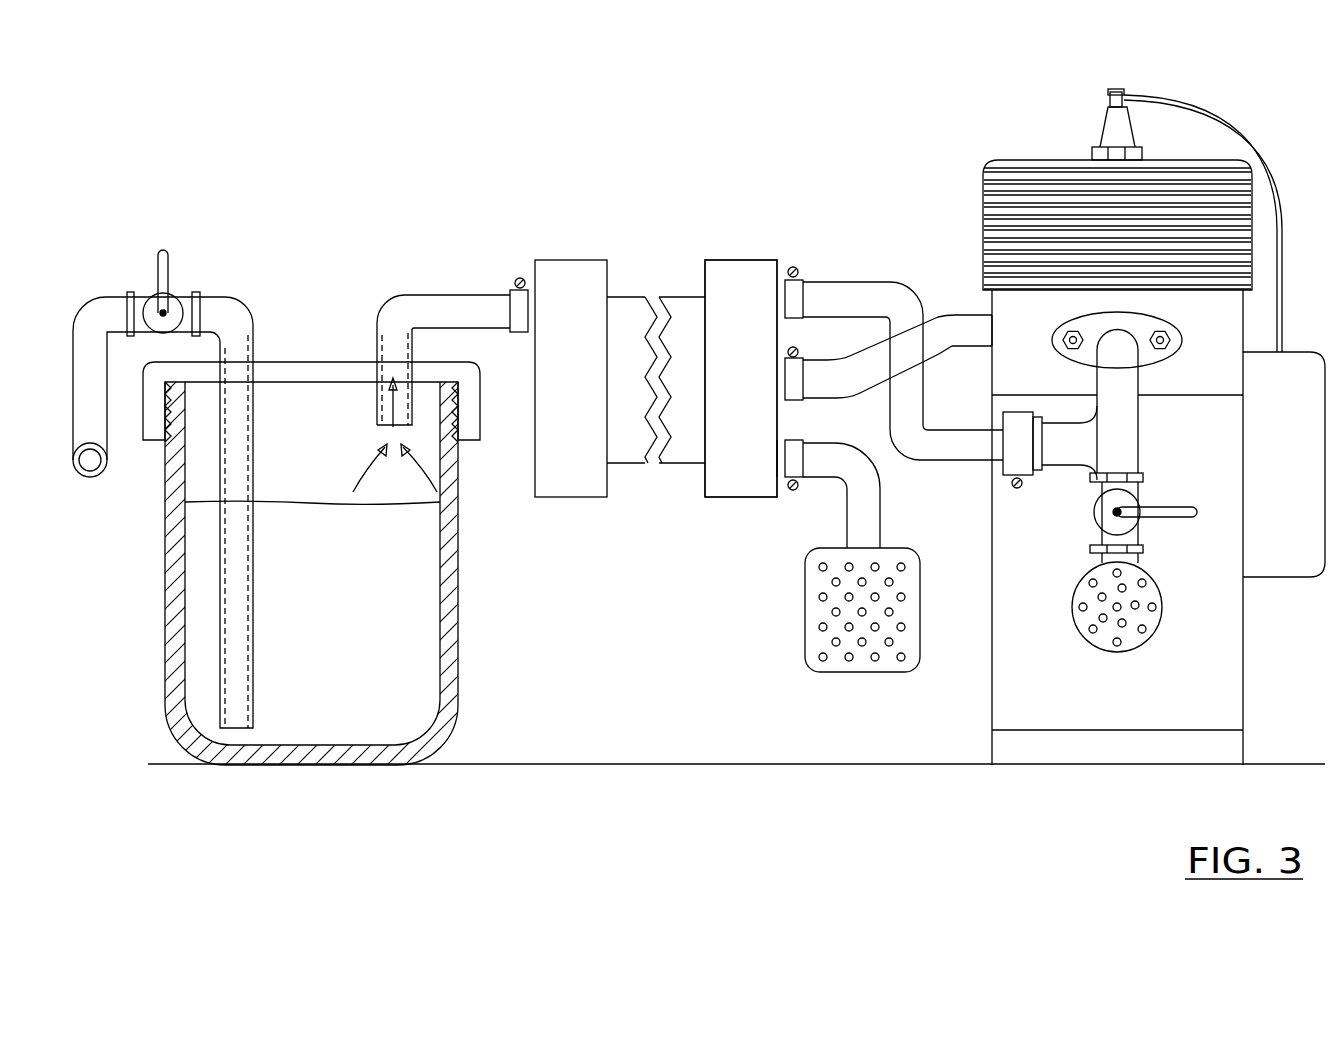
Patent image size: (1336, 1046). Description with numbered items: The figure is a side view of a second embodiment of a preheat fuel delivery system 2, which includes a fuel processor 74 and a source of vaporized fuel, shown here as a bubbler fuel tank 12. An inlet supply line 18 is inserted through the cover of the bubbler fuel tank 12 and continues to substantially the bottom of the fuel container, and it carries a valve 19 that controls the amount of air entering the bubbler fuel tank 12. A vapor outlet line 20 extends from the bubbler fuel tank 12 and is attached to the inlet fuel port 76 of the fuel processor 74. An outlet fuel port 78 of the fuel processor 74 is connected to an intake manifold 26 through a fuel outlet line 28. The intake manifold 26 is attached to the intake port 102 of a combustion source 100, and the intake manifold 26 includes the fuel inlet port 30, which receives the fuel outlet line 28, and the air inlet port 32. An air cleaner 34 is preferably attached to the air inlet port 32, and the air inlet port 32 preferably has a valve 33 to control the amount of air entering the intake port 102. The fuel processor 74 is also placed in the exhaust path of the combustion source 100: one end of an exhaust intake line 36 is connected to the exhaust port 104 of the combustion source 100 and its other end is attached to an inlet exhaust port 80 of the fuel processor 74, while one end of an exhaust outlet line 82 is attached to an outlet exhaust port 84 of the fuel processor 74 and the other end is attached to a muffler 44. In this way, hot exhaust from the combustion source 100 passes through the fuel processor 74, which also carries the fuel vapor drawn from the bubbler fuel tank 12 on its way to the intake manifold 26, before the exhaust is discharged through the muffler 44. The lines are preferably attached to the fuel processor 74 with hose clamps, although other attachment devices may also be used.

The preheat fuel delivery system 2 is at (418, 128).
The bubbler fuel tank 12 is at (305, 322).
The inlet supply line 18 is at (103, 307).
The valve 19 is at (167, 255).
The vapor outlet line 20 is at (488, 290).
The intake manifold 26 is at (1115, 337).
The fuel outlet line 28 is at (867, 285).
The fuel inlet port 30 is at (1053, 470).
The air inlet port 32 is at (1090, 548).
The valve 33 is at (1130, 502).
The air cleaner 34 is at (1075, 620).
The exhaust intake line 36 is at (820, 360).
The muffler 44 is at (803, 630).
The fuel processor 74 is at (628, 285).
The inlet fuel port 76 is at (530, 333).
The outlet fuel port 78 is at (783, 278).
The inlet exhaust port 80 is at (777, 373).
The exhaust outlet line 82 is at (852, 512).
The outlet exhaust port 84 is at (775, 455).
The combustion source 100 is at (946, 148).
The intake port 102 is at (1083, 317).
The exhaust port 104 is at (985, 335).